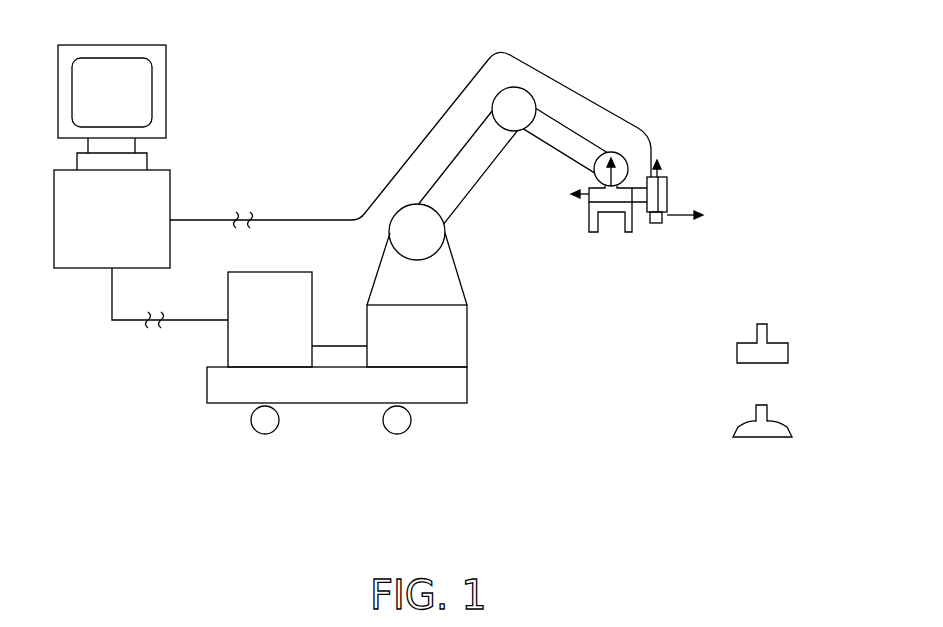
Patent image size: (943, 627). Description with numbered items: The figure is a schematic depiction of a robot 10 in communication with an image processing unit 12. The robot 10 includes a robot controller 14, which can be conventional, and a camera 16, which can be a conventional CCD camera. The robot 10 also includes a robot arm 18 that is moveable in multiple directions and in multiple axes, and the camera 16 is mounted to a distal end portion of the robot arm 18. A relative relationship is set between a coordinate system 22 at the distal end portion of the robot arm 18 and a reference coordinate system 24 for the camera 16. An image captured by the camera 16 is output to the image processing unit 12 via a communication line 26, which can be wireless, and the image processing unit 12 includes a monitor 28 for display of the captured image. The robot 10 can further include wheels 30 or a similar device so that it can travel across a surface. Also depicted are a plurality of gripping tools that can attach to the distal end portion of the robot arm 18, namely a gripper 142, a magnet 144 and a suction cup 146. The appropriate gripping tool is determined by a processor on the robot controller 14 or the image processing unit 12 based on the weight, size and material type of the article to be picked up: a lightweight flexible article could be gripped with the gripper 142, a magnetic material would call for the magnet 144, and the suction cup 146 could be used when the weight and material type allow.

The robot 10 is at (495, 355).
The image processing unit 12 is at (171, 194).
The robot controller 14 is at (236, 336).
The camera 16 is at (654, 212).
The robot arm 18 is at (452, 201).
The coordinate system 22 is at (585, 199).
The reference coordinate system 24 is at (677, 202).
The communication line 26 is at (528, 62).
The monitor 28 is at (168, 92).
The wheels 30 is at (262, 435).
The gripper 142 is at (625, 232).
The magnet 144 is at (778, 353).
The suction cup 146 is at (773, 427).